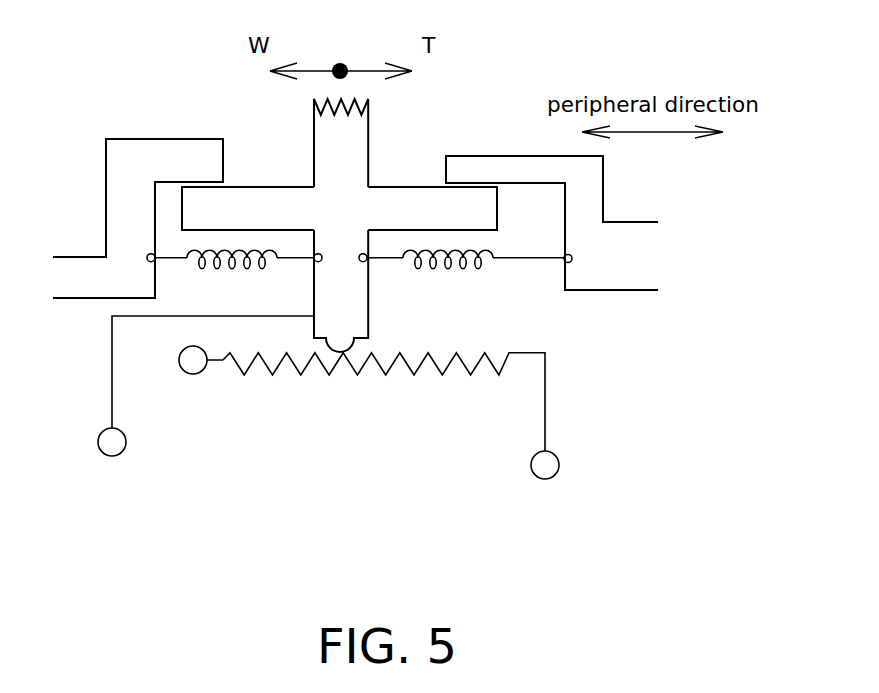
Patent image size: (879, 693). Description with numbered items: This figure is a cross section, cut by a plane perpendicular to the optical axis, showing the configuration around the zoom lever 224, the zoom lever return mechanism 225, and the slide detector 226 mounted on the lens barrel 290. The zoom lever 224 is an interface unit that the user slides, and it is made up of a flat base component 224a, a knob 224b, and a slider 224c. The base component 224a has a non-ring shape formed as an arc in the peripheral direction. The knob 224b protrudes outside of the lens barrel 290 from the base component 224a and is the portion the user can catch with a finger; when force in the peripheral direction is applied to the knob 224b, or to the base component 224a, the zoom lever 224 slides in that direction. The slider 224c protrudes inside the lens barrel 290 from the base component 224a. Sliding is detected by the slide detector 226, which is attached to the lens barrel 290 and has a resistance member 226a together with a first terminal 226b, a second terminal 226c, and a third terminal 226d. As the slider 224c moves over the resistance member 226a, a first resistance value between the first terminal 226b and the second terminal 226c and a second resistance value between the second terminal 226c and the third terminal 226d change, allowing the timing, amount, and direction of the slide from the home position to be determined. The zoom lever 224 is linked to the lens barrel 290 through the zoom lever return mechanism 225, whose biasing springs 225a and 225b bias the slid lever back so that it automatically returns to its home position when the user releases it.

The zoom lever 224 is at (371, 197).
The base component 224a is at (278, 203).
The knob 224b is at (350, 163).
The slider 224c is at (357, 332).
The zoom lever return mechanism 225 is at (378, 298).
The biasing spring 225a is at (262, 268).
The biasing spring 225b is at (386, 259).
The slide detector 226 is at (293, 417).
The resistance member 226a is at (433, 374).
The first terminal 226b is at (197, 375).
The second terminal 226c is at (108, 445).
The third terminal 226d is at (540, 467).
The lens barrel 290 is at (125, 152).